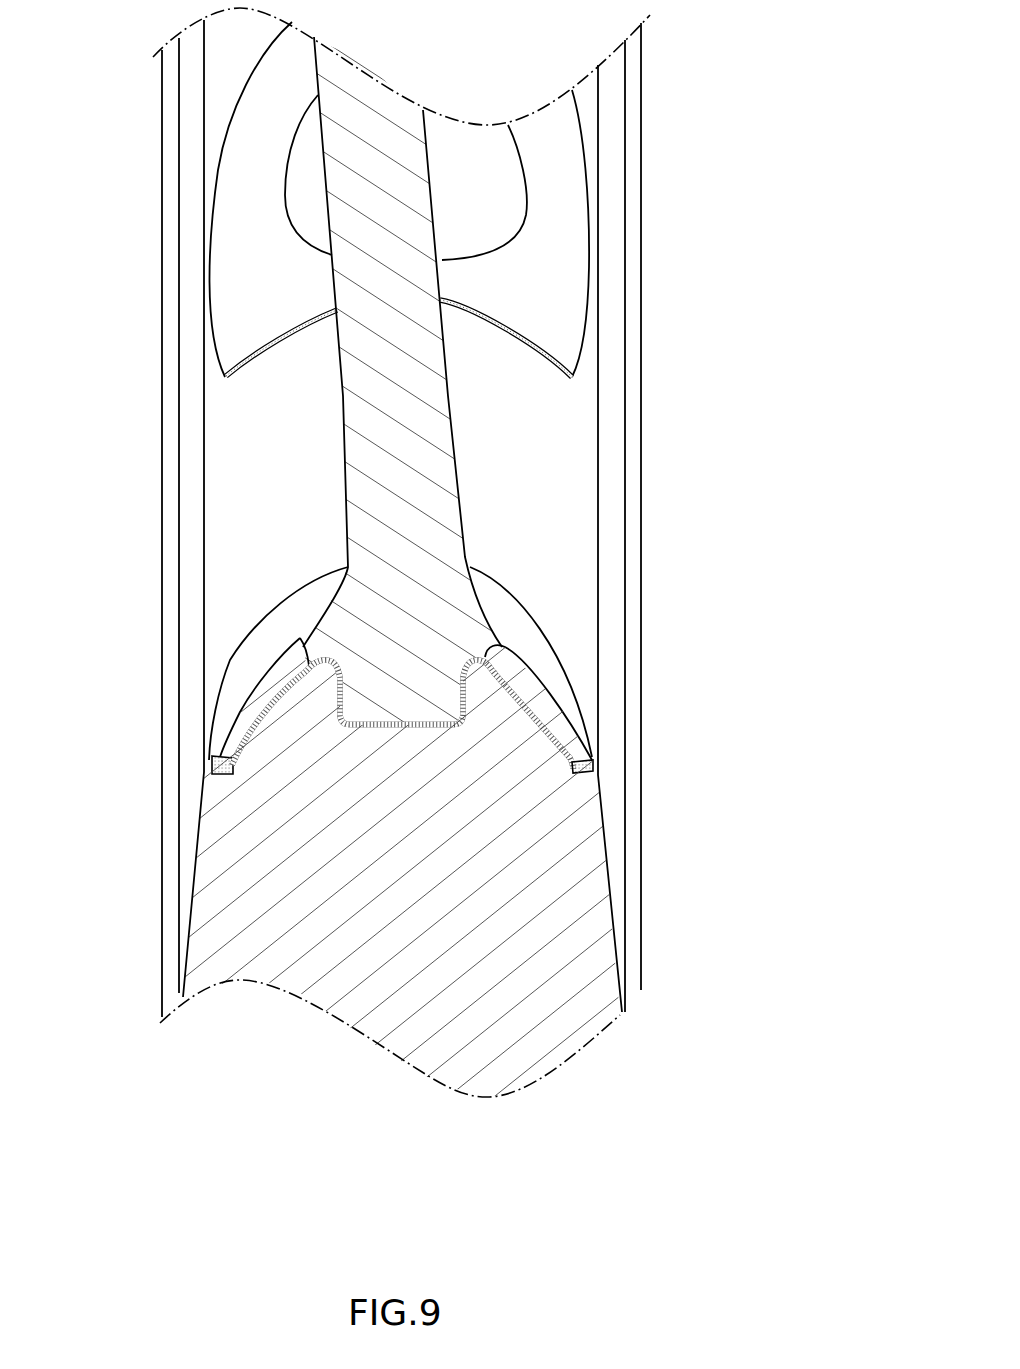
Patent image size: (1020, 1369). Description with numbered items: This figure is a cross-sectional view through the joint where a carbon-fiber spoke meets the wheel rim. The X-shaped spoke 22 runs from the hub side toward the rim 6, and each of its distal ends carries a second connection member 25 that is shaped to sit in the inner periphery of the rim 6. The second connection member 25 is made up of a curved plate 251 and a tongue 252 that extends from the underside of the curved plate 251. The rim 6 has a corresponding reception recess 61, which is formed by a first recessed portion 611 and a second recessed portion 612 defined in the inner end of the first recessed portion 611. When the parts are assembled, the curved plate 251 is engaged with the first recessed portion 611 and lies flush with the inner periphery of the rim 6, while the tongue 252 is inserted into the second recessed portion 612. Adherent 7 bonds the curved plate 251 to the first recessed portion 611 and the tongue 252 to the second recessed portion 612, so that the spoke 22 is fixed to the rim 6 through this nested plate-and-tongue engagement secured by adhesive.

The spoke 22 is at (467, 477).
The second connection member 25 is at (303, 617).
The curved plate 251 is at (253, 687).
The tongue 252 is at (388, 680).
The adherent 7 is at (313, 663).
The rim 6 is at (552, 1040).
The reception recess 61 is at (560, 760).
The first recessed portion 611 is at (485, 663).
The second recessed portion 612 is at (403, 727).